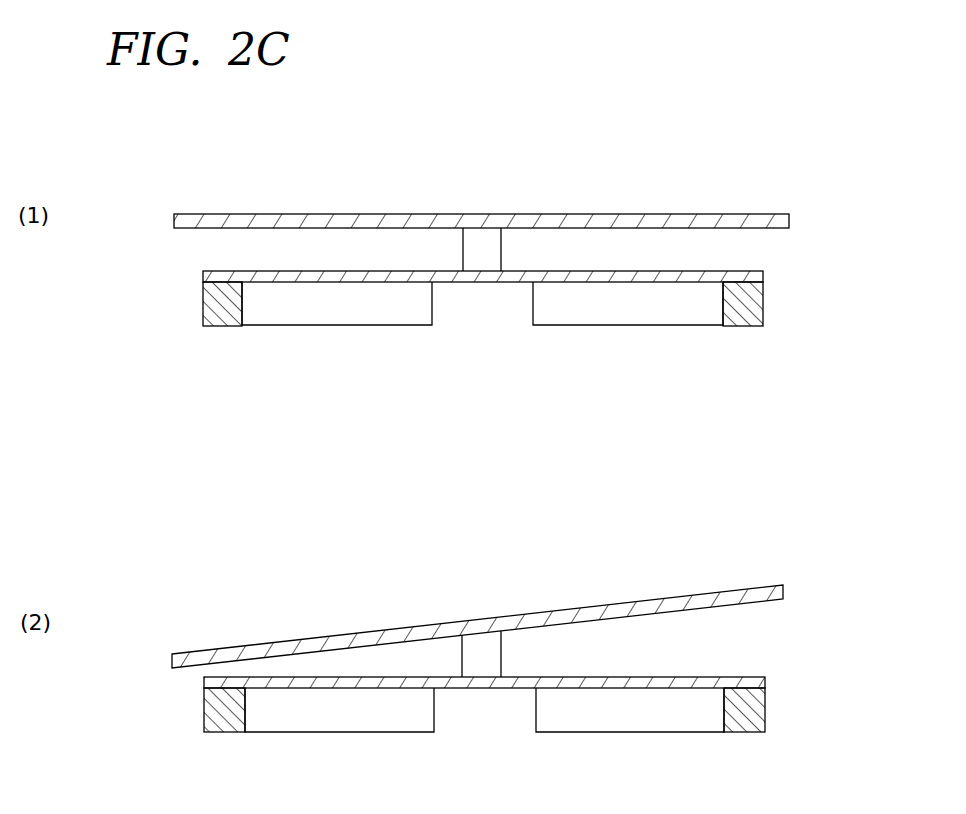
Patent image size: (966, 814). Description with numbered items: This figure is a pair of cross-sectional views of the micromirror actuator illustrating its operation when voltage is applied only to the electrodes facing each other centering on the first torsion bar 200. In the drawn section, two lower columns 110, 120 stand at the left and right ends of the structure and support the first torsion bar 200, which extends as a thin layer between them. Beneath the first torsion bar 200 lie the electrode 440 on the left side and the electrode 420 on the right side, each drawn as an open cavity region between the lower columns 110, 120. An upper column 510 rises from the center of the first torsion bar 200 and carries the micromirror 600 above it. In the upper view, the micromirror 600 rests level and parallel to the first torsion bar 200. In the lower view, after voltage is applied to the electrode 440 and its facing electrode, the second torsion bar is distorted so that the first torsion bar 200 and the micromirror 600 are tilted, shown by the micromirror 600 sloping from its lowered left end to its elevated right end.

The lower column 110 is at (203, 301).
The lower column 120 is at (763, 302).
The first torsion bar 200 is at (380, 271).
The electrode 420 is at (685, 315).
The electrode 440 is at (287, 318).
The upper column 510 is at (484, 237).
The micromirror 600 is at (660, 214).